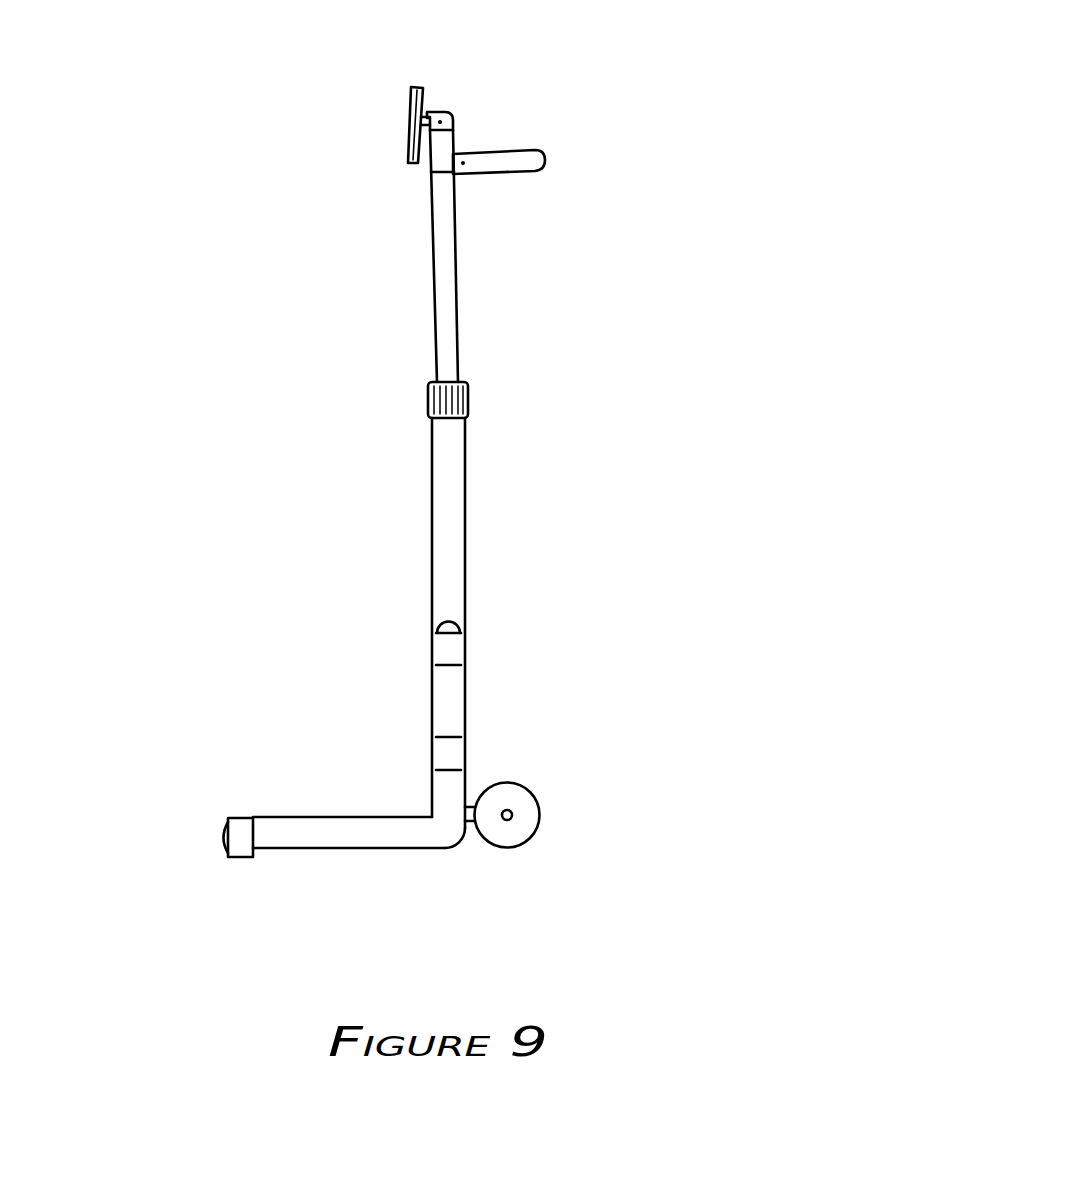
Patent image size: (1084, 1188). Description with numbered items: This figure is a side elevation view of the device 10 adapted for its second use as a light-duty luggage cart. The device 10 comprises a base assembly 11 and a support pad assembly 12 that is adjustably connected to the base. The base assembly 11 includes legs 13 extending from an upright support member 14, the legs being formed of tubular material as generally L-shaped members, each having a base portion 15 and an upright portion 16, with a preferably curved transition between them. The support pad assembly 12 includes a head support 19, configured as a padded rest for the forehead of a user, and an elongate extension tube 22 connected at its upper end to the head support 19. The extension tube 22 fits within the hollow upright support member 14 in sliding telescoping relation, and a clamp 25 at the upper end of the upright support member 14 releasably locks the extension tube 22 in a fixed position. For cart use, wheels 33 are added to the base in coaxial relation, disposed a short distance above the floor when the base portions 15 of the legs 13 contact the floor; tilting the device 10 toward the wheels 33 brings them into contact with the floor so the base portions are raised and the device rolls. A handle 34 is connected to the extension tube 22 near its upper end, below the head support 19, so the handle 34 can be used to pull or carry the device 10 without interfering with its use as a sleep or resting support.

The device 10 is at (563, 435).
The base assembly 11 is at (402, 782).
The support pad assembly 12 is at (486, 125).
The legs 13 is at (452, 833).
The upright support member 14 is at (443, 487).
The base portion 15 is at (335, 837).
The upright portion 16 is at (457, 697).
The head support 19 is at (425, 86).
The extension tube 22 is at (450, 265).
The clamp 25 is at (428, 400).
The wheels 33 is at (535, 816).
The handle 34 is at (545, 160).